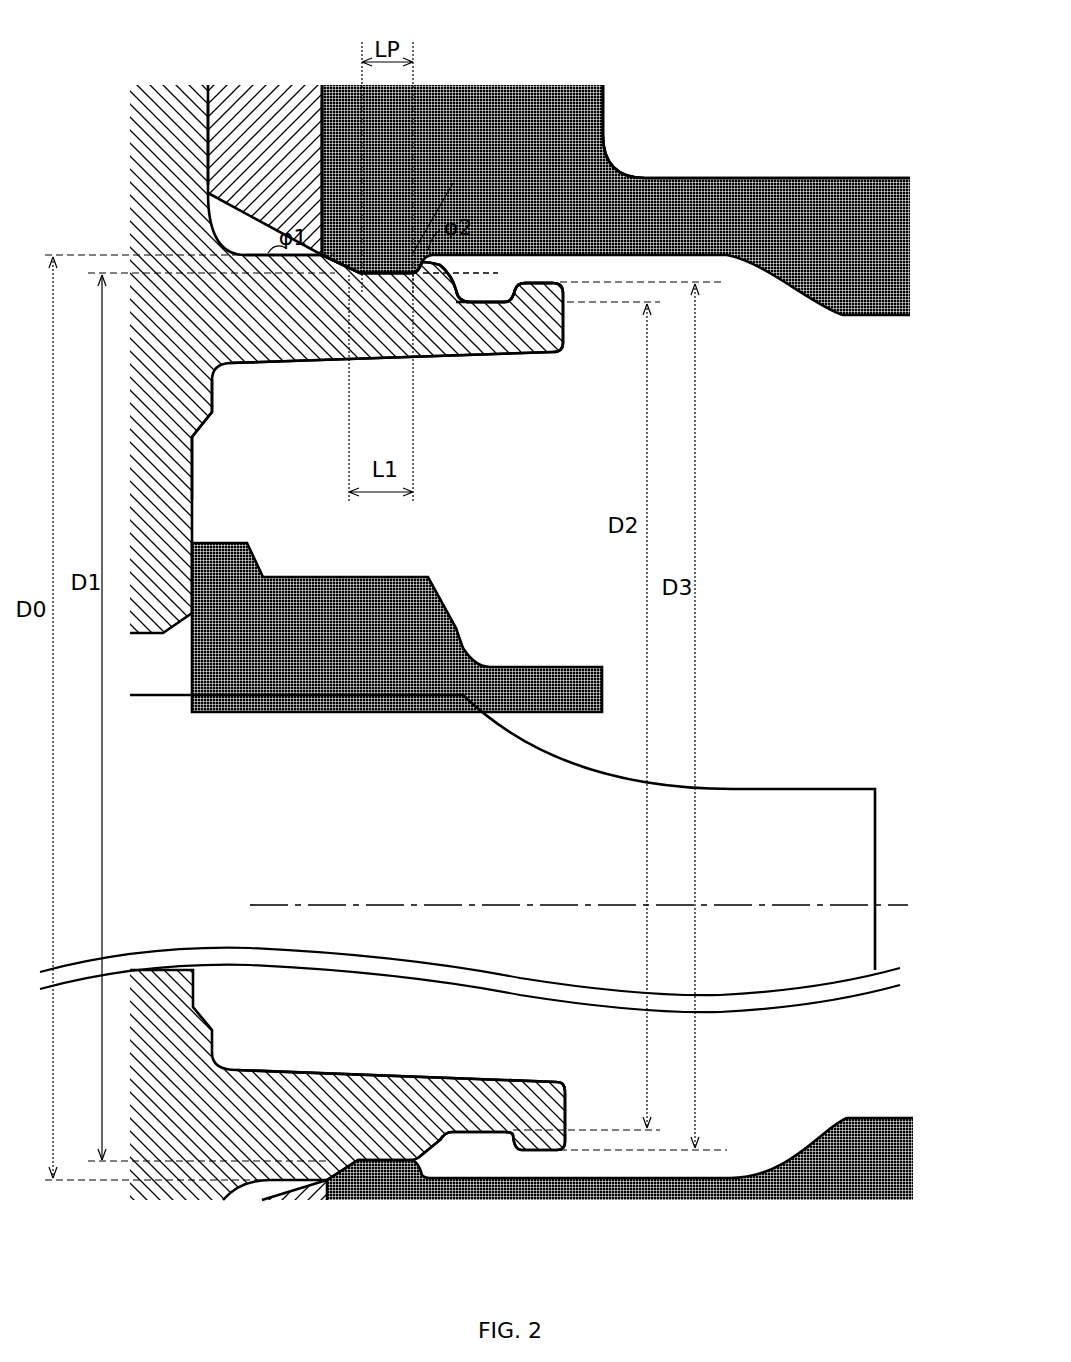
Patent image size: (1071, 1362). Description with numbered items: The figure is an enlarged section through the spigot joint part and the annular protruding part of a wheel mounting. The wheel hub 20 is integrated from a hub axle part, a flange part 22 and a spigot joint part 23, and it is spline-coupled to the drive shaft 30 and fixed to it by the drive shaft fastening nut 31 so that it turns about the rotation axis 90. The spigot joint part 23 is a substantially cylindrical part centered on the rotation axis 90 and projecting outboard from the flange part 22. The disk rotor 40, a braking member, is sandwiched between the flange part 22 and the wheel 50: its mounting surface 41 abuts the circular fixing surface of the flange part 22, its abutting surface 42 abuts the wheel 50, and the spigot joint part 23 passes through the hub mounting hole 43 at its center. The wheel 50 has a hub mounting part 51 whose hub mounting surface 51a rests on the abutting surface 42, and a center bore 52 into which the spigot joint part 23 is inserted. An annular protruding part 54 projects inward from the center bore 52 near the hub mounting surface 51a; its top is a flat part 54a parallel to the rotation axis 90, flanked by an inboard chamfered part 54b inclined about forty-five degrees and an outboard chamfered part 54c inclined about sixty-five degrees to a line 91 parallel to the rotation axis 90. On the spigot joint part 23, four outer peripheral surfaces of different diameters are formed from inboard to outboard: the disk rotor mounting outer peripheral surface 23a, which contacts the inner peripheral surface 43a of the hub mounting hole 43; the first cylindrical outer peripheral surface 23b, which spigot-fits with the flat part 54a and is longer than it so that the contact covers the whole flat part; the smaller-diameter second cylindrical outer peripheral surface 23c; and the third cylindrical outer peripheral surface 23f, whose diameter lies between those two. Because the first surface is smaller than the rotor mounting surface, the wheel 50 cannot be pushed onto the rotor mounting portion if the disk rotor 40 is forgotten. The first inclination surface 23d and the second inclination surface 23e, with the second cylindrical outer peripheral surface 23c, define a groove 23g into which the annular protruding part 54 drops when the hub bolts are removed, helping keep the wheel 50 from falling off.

The wheel hub 20 is at (224, 446).
The flange part 22 is at (155, 146).
The spigot joint part 23 is at (552, 325).
The disk rotor mounting outer peripheral surface 23a is at (270, 258).
The first cylindrical outer peripheral surface 23b is at (407, 276).
The second cylindrical outer peripheral surface 23c is at (494, 295).
The first inclination surface 23d is at (466, 304).
The second inclination surface 23e is at (521, 291).
The third cylindrical outer peripheral surface 23f is at (558, 268).
The groove 23g is at (467, 445).
The drive shaft 30 is at (845, 805).
The drive shaft fastening nut 31 is at (440, 620).
The disk rotor 40 is at (235, 85).
The mounting surface 41 is at (186, 112).
The abutting surface 42 is at (340, 128).
The hub mounting hole 43 is at (273, 516).
The inner peripheral surface of the hub mounting hole 43a is at (295, 258).
The wheel 50 is at (571, 66).
The hub mounting part 51 is at (525, 85).
The hub mounting surface 51a is at (308, 118).
The center bore 52 is at (505, 522).
The annular protruding part 54 is at (375, 262).
The flat part (inner peripheral surface) 54a is at (383, 276).
The chamfered part (first side surface) 54b is at (340, 264).
The chamfered part (second side surface) 54c is at (428, 266).
The rotation axis 90 is at (906, 905).
The line parallel to the rotation axis 91 is at (440, 268).